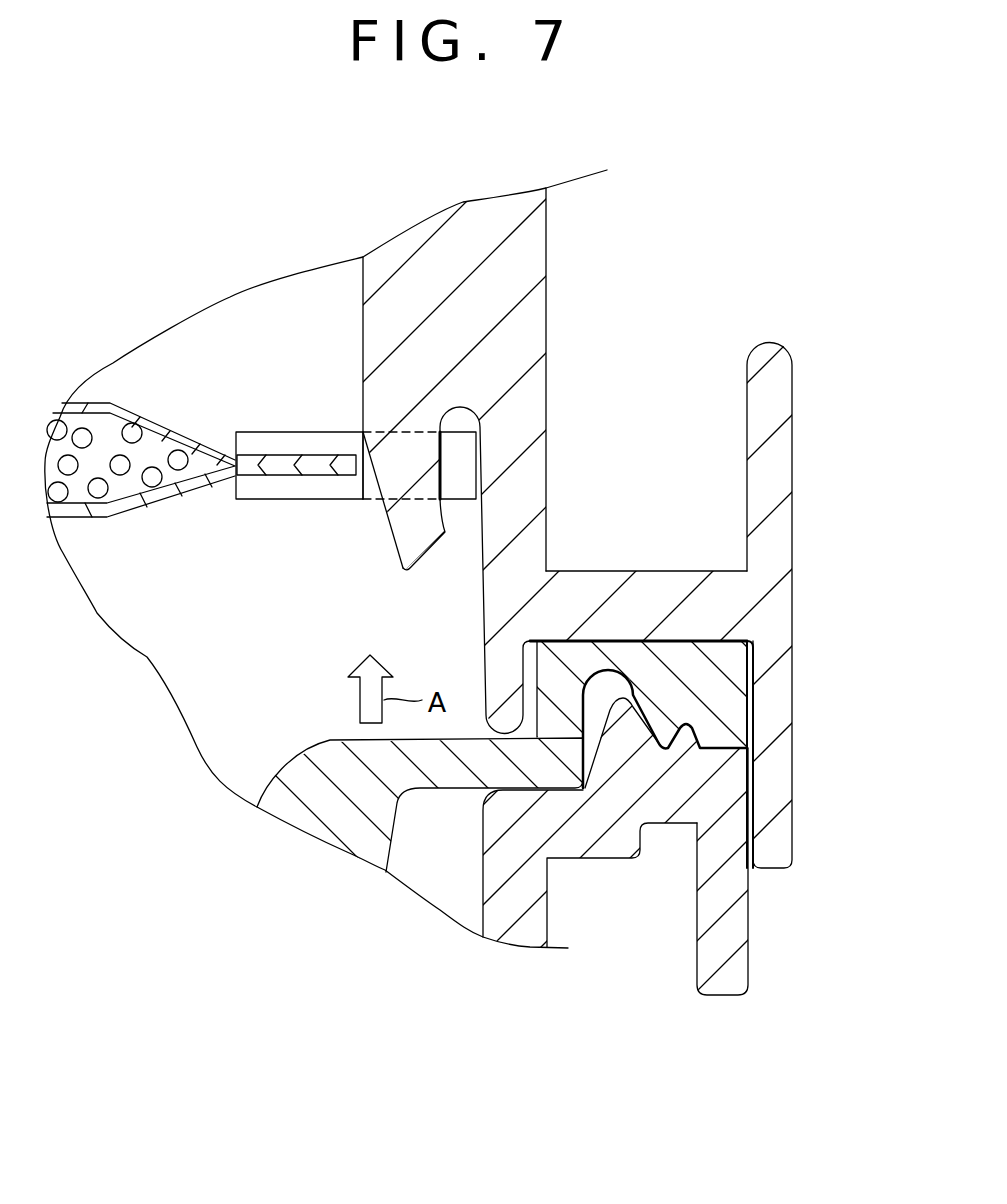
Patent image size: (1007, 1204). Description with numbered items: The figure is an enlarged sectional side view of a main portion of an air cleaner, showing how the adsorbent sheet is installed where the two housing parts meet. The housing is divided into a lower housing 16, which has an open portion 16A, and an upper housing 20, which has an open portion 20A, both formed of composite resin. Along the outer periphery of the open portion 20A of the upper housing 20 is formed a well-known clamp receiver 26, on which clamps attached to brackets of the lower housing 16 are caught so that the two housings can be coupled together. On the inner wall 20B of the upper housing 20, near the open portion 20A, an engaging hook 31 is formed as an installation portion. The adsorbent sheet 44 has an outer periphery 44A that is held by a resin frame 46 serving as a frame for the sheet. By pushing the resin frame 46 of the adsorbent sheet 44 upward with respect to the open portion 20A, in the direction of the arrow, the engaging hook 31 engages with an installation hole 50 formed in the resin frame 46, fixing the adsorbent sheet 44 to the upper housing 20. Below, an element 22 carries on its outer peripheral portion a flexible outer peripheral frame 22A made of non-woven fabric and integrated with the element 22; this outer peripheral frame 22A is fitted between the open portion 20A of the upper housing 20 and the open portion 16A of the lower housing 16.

The lower housing 16 is at (761, 929).
The open portion 16A is at (690, 782).
The upper housing 20 is at (559, 271).
The open portion 20A is at (720, 607).
The inner wall 20B is at (483, 602).
The element 22 is at (296, 742).
The outer peripheral frame 22A is at (733, 697).
The clamp receiver 26 is at (778, 455).
The engaging hook 31 is at (400, 547).
The adsorbent sheet 44 is at (138, 387).
The outer periphery 44A is at (250, 476).
The resin frame 46 is at (303, 420).
The installation hole 50 is at (365, 500).